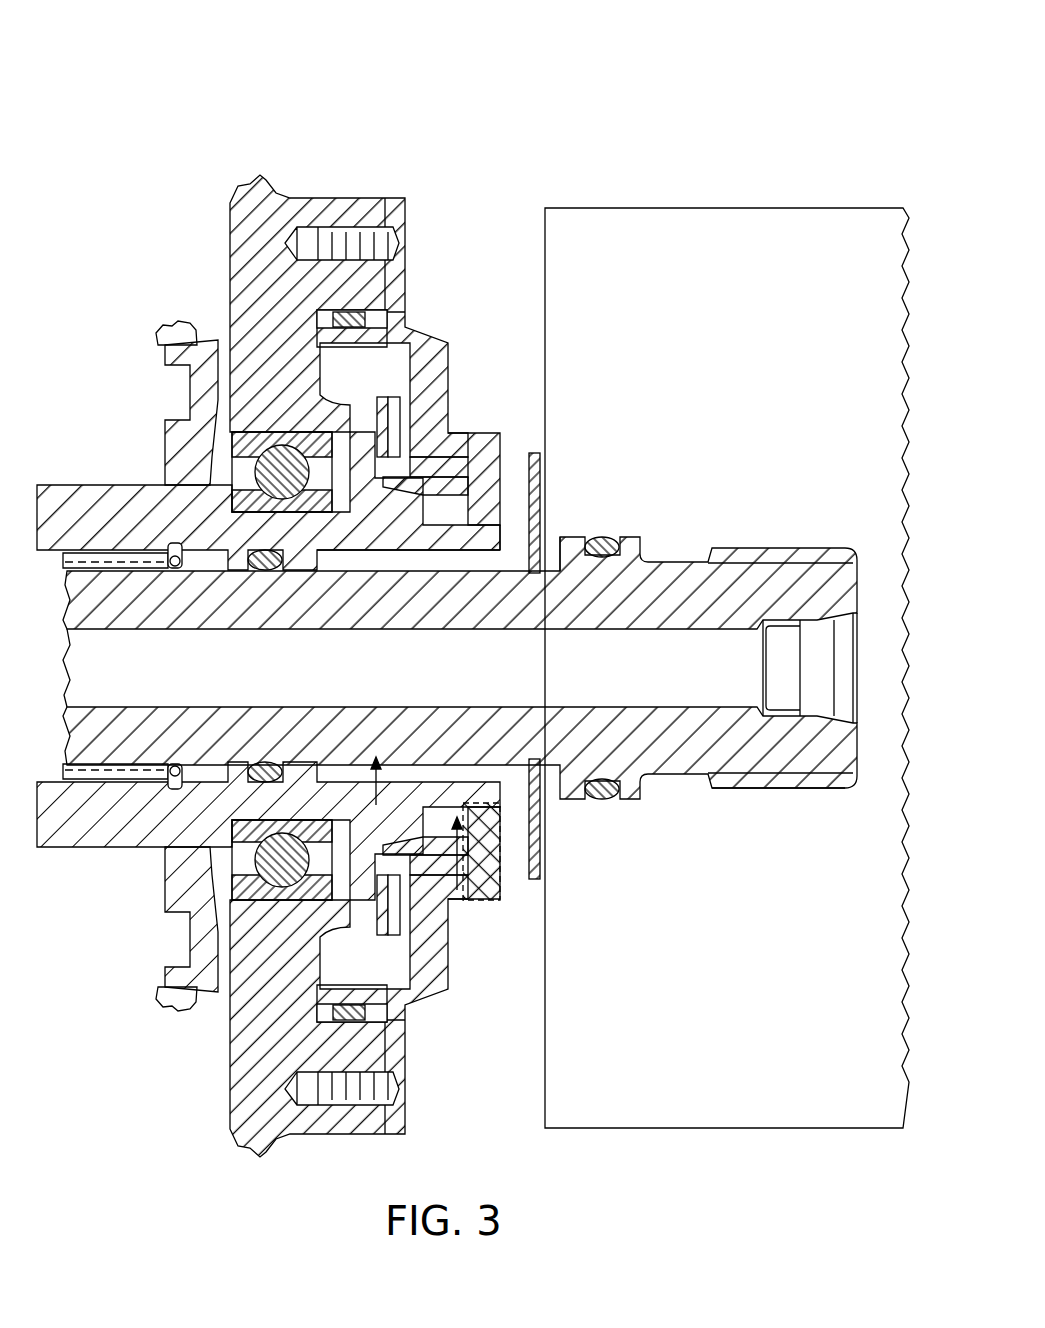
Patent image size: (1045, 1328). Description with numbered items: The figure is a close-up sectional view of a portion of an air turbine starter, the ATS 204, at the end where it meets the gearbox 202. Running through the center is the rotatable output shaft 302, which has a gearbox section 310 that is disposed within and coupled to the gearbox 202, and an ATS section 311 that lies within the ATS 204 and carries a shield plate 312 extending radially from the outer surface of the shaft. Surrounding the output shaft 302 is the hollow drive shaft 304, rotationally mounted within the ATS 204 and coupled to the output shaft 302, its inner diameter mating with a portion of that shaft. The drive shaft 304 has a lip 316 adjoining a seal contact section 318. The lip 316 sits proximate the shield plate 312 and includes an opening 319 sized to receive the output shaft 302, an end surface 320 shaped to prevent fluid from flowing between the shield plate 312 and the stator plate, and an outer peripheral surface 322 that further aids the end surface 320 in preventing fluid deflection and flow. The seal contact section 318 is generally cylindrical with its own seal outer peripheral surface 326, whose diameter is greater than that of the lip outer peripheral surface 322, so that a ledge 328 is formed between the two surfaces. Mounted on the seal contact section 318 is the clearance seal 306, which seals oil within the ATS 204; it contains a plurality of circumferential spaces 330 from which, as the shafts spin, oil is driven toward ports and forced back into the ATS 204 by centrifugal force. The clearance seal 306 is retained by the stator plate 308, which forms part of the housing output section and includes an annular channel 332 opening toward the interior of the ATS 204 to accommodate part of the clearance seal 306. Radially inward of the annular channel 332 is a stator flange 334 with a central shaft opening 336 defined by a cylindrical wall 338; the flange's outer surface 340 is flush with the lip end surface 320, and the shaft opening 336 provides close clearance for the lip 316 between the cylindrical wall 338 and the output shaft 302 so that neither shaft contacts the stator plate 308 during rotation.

The gearbox 202 is at (730, 234).
The ATS 204 is at (158, 140).
The rotatable output shaft 302 is at (682, 562).
The drive shaft 304 is at (83, 490).
The clearance seal 306 is at (395, 440).
The stator plate 308 is at (415, 343).
The gearbox section 310 is at (680, 791).
The ATS section 311 is at (364, 798).
The shield plate 312 is at (536, 478).
The lip 316 is at (487, 543).
The seal contact section 318 is at (356, 472).
The opening 319 is at (505, 558).
The end surface 320 is at (517, 556).
The outer peripheral surface 322 is at (473, 816).
The seal outer peripheral surface 326 is at (475, 870).
The ledge 328 is at (476, 864).
The spaces 330 is at (418, 885).
The annular channel 332 is at (483, 433).
The stator flange 334 is at (493, 462).
The shaft opening 336 is at (495, 533).
The cylindrical wall 338 is at (480, 806).
The outer surface 340 is at (497, 505).